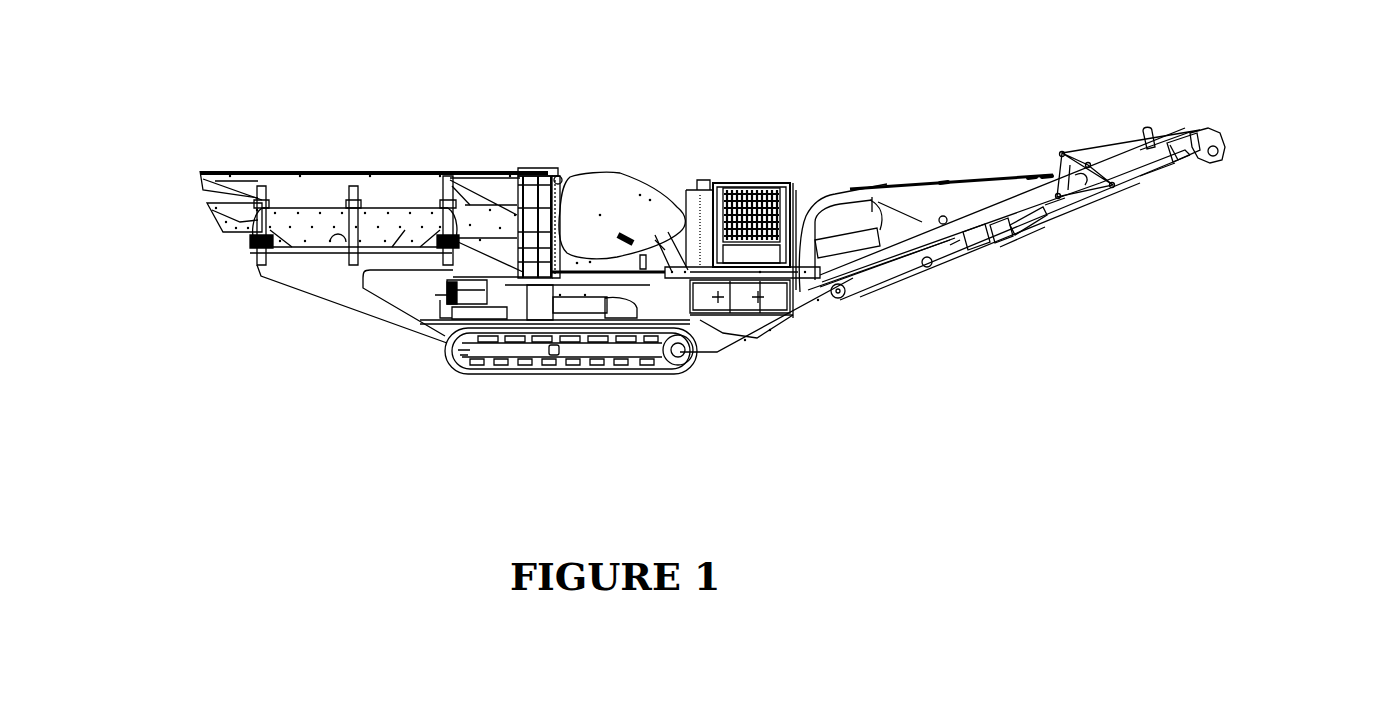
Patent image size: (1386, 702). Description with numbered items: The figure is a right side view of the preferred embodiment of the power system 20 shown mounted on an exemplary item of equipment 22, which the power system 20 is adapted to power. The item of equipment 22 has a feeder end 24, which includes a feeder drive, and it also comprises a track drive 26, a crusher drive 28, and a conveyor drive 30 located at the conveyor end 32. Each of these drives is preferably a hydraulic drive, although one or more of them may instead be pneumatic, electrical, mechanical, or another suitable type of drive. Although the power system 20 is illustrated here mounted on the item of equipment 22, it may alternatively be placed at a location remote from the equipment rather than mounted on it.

The power system 20 is at (748, 182).
The item of equipment 22 is at (470, 140).
The feeder end 24 is at (190, 208).
The track drive 26 is at (596, 380).
The crusher drive 28 is at (678, 186).
The conveyor drive 30 is at (1020, 245).
The conveyor end 32 is at (1240, 140).